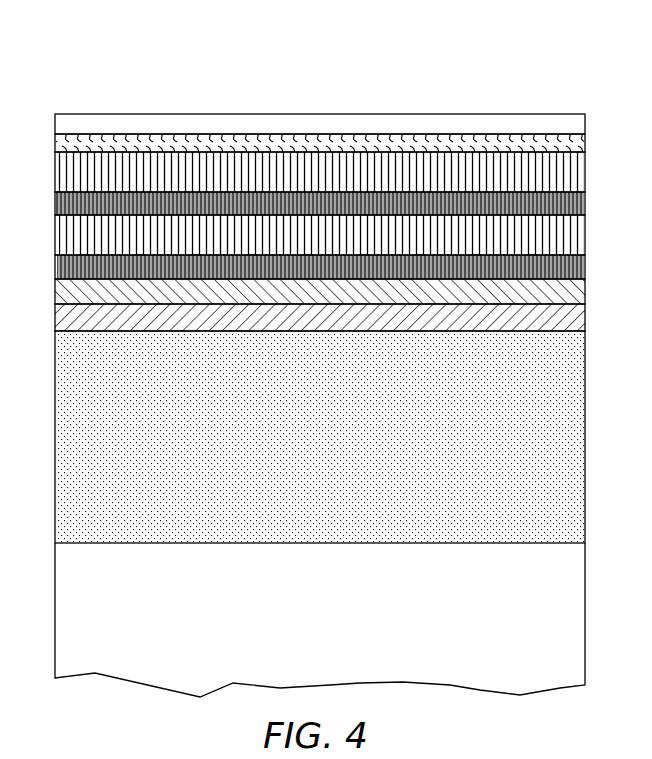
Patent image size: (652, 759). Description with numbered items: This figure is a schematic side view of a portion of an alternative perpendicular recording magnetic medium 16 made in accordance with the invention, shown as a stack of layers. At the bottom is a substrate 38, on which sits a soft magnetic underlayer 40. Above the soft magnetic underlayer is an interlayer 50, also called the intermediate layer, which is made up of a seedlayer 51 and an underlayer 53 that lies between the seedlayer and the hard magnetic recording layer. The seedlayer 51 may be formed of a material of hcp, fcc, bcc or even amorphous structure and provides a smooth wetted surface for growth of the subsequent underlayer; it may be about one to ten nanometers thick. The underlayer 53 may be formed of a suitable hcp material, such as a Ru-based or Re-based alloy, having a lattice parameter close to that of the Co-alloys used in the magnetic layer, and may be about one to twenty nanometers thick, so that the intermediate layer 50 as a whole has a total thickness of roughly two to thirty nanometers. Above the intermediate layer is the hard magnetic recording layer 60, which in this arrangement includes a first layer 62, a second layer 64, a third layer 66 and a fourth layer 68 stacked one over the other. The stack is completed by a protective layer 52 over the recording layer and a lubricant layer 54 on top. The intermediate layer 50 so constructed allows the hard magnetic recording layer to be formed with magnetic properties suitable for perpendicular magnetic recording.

The recording medium 16 is at (320, 98).
The substrate 38 is at (575, 610).
The soft magnetic underlayer 40 is at (576, 459).
The interlayer 50 is at (323, 304).
The seedlayer 51 is at (62, 325).
The underlayer 53 is at (60, 297).
The hard magnetic recording layer 60 is at (323, 216).
The first layer 62 is at (577, 272).
The second layer 64 is at (570, 240).
The third layer 66 is at (575, 207).
The fourth layer 68 is at (573, 177).
The protective layer 52 is at (583, 143).
The lubricant layer 54 is at (580, 125).